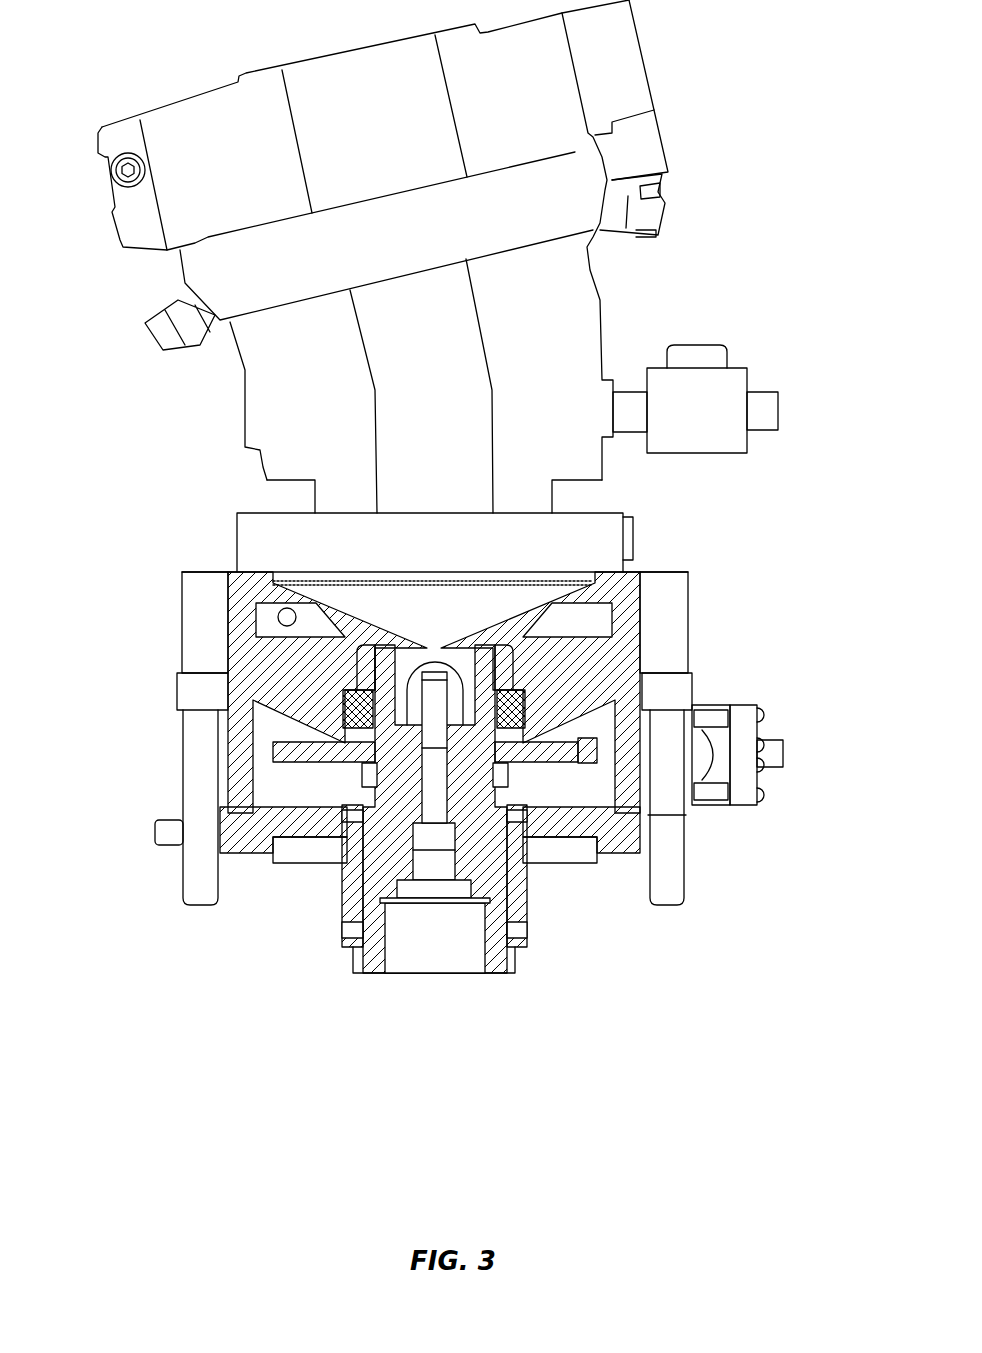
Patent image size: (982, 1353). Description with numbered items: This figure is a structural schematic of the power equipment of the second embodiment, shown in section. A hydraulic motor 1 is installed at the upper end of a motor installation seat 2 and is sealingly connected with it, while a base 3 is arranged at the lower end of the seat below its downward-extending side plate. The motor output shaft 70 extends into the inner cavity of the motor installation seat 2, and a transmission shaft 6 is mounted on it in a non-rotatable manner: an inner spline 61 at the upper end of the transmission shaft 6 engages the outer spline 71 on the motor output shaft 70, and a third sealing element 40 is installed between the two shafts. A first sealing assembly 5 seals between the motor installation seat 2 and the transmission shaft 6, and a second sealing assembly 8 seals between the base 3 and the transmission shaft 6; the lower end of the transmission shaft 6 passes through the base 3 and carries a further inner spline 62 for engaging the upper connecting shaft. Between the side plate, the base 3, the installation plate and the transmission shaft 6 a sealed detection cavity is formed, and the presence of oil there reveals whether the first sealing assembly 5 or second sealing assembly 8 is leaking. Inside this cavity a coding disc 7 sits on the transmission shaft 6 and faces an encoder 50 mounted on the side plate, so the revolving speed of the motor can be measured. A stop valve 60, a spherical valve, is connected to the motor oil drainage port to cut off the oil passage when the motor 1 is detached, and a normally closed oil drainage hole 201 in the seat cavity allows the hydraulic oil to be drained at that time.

The motor 1 is at (266, 541).
The motor installation seat 2 is at (230, 643).
The base 3 is at (232, 828).
The first sealing assembly 5 is at (615, 663).
The transmission shaft 6 is at (392, 808).
The coding disc 7 is at (605, 718).
The second sealing assembly 8 is at (530, 900).
The third sealing element 40 is at (345, 726).
The encoder 50 is at (723, 703).
The stop valve 60 is at (683, 420).
The inner spline 61 is at (460, 727).
The inner spline 62 is at (377, 973).
The motor output shaft 70 is at (270, 573).
The outer spline 71 is at (452, 660).
The oil drainage hole 201 is at (278, 612).